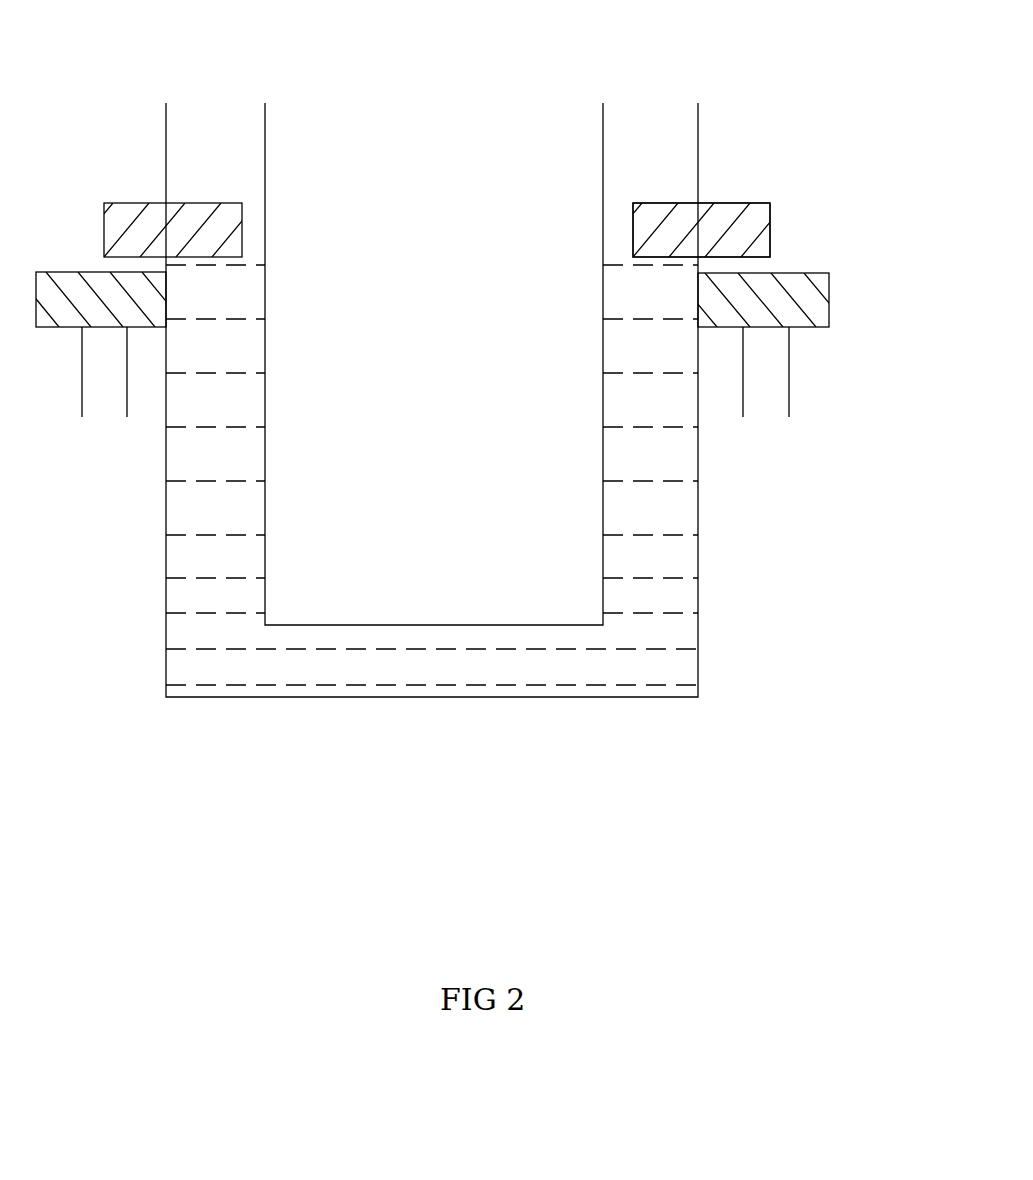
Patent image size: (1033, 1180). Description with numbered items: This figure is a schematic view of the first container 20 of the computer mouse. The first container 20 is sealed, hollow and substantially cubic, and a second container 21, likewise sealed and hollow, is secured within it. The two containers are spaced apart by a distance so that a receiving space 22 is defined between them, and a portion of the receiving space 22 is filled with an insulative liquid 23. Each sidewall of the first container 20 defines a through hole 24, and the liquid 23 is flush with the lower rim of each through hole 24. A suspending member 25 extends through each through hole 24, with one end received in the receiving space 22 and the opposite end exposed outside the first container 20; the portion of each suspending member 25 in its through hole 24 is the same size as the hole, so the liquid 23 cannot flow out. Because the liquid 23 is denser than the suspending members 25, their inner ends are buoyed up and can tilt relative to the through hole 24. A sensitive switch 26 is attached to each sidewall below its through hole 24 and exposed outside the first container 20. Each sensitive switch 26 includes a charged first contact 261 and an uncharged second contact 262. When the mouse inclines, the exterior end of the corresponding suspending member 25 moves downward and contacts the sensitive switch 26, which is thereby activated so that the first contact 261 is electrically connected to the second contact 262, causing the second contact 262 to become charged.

The first container 20 is at (700, 137).
The second container 21 is at (603, 160).
The receiving space 22 is at (242, 163).
The insulative liquid 23 is at (360, 643).
The through hole 24 is at (705, 203).
The suspending member 25 is at (772, 222).
The sensitive switch 26 is at (829, 300).
The first contact 261 is at (743, 377).
The second contact 262 is at (789, 377).